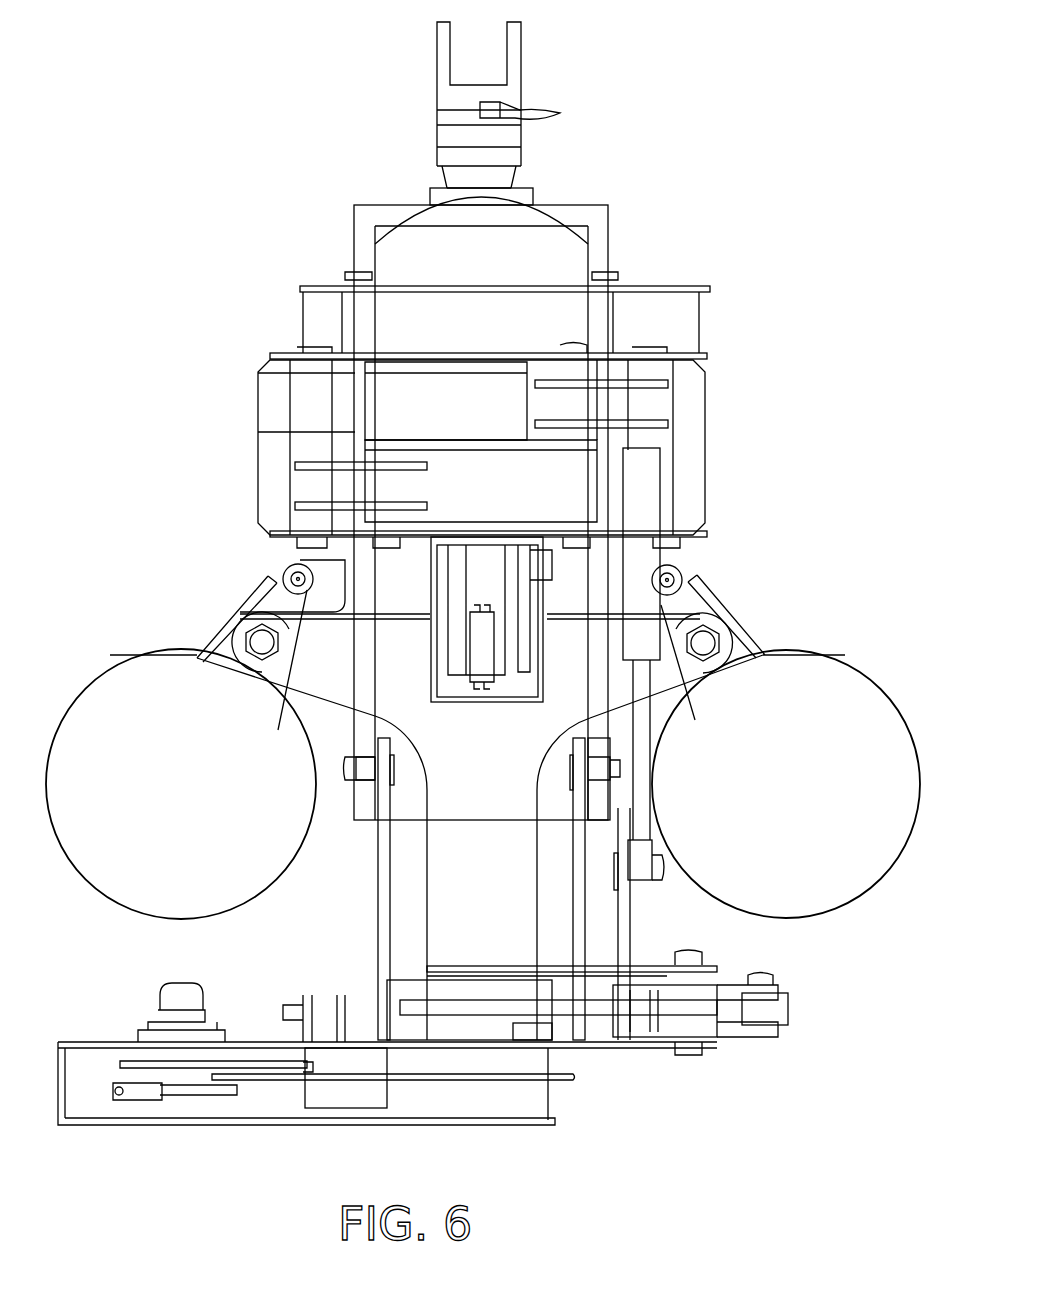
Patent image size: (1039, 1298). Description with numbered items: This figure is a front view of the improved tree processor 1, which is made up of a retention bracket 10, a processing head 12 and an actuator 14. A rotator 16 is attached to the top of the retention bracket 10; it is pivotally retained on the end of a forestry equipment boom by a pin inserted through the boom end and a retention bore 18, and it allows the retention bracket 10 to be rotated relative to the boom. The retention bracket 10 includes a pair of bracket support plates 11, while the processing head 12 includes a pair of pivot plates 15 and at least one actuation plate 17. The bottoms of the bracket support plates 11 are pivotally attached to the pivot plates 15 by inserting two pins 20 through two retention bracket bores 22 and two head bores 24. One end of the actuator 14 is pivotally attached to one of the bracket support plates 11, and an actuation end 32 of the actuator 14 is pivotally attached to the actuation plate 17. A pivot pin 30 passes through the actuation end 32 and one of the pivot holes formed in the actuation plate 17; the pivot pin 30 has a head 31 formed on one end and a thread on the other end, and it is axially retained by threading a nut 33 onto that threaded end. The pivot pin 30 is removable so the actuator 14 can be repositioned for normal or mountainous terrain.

The improved tree processor 1 is at (742, 313).
The retention bracket 10 is at (354, 236).
The bracket support plates 11 is at (353, 645).
The processing head 12 is at (378, 907).
The actuator 14 is at (645, 492).
The pivot plates 15 is at (390, 933).
The rotator 16 is at (520, 138).
The actuation plate 17 is at (630, 927).
The retention bore 18 is at (521, 48).
The pins 20 is at (390, 777).
The retention bracket bores 22 is at (362, 792).
The head bores 24 is at (387, 792).
The pivot pin 30 is at (665, 868).
The head 31 is at (613, 863).
The actuation end 32 is at (653, 848).
The nut 33 is at (650, 882).